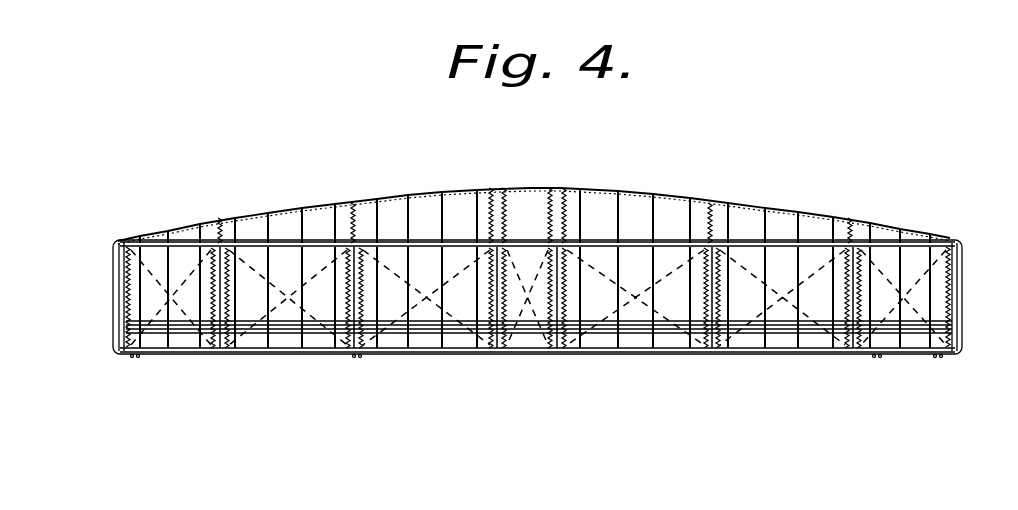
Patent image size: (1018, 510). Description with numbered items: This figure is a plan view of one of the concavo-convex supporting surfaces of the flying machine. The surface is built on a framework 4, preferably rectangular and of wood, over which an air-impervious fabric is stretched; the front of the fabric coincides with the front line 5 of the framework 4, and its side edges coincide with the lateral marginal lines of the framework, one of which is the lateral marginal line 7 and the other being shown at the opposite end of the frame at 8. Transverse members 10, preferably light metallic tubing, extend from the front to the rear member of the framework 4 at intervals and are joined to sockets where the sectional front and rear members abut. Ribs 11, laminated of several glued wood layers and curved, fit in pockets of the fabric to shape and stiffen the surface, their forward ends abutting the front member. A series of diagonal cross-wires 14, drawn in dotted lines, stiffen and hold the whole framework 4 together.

The framework 4 is at (927, 243).
The front line of the framework 5 is at (638, 352).
The lateral marginal line of the framework 7 is at (117, 288).
The rear end member 8 is at (956, 308).
The transverse members 10 is at (221, 298).
The ribs 11 is at (302, 223).
The diagonal cross-wires 14 is at (538, 297).